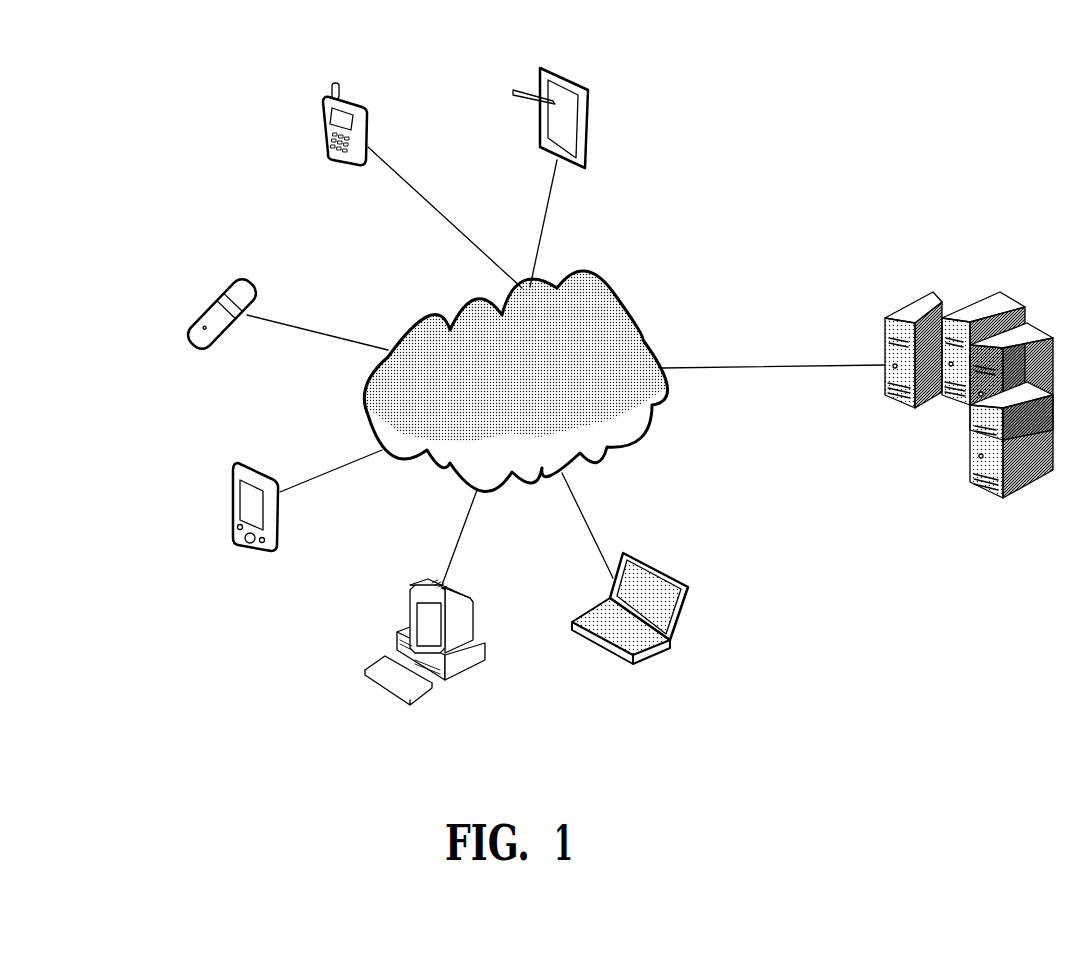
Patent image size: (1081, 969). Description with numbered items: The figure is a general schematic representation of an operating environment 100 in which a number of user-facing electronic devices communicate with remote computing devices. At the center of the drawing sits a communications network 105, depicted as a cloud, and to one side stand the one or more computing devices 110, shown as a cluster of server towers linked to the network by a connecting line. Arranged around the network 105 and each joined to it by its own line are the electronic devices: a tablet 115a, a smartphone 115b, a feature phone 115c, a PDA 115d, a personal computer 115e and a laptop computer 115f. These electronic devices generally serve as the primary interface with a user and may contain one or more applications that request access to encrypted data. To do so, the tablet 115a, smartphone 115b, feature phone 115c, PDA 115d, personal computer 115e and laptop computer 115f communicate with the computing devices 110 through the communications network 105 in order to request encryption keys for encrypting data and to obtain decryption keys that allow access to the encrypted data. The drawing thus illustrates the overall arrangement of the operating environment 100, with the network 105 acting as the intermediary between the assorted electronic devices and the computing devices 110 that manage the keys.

The operating environment 100 is at (778, 141).
The communications network 105 is at (642, 300).
The computing devices 110 is at (922, 293).
The tablet 115a is at (582, 83).
The smartphone 115b is at (320, 130).
The feature phone 115c is at (195, 345).
The PDA 115d is at (243, 551).
The personal computer 115e is at (462, 672).
The laptop computer 115f is at (640, 665).